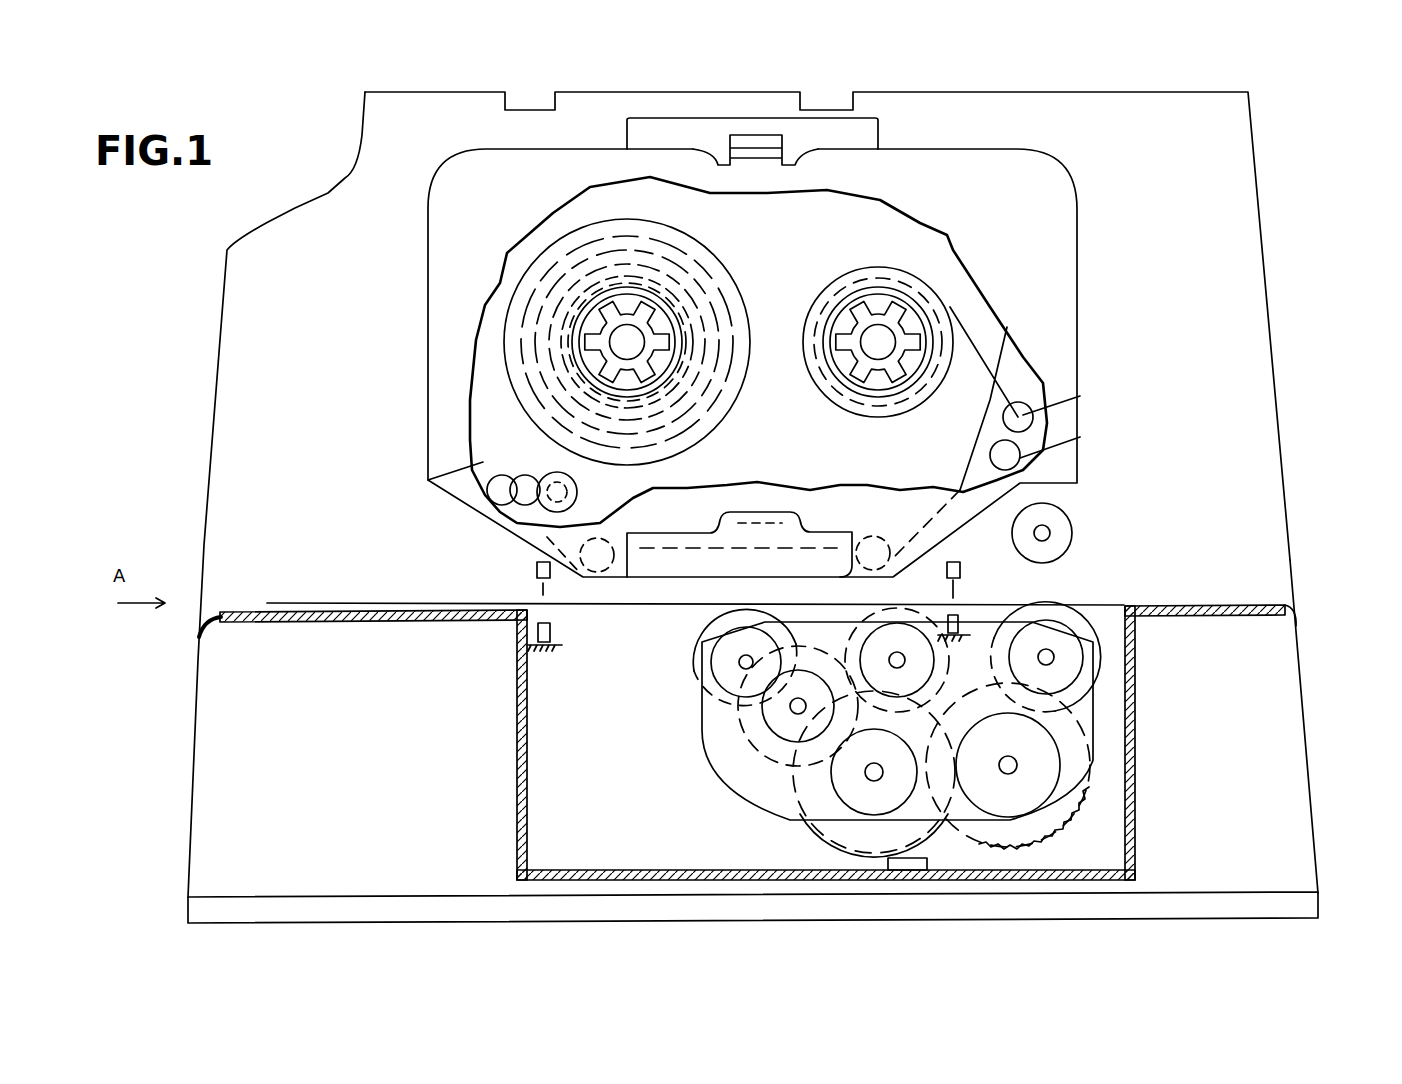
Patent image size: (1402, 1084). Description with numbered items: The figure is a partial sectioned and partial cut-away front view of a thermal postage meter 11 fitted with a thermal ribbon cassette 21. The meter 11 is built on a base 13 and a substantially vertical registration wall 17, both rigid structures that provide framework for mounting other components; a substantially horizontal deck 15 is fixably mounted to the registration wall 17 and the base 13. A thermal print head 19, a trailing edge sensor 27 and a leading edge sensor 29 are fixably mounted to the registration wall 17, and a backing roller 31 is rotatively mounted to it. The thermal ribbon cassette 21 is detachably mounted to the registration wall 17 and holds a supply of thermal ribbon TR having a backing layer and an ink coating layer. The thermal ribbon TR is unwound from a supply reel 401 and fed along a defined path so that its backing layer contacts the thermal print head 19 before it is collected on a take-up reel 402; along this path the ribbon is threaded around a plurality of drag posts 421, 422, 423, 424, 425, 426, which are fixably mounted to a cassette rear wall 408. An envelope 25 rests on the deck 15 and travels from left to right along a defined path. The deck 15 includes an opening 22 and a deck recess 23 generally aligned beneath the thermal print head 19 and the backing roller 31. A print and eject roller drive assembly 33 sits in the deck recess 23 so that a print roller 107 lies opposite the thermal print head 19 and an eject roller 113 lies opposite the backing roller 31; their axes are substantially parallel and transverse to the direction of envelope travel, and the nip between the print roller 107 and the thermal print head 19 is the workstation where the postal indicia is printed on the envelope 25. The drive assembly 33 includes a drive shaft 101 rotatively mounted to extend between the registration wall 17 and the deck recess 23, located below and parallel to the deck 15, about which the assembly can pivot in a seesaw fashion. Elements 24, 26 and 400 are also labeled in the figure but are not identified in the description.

The thermal postage meter 11 is at (1323, 159).
The base 13 is at (1312, 903).
The deck 15 is at (1235, 605).
The registration wall 17 is at (1275, 472).
The thermal print head 19 is at (687, 530).
The thermal ribbon cassette 21 is at (1127, 240).
The opening 22 is at (533, 603).
The deck recess 23 is at (1111, 612).
The support pin 24 is at (956, 598).
The envelope 25 is at (397, 610).
The cartridge bottom plate 26 is at (262, 603).
The trailing edge sensor 27 is at (532, 567).
The leading edge sensor 29 is at (955, 562).
The backing roller 31 is at (1062, 524).
The print and eject roller drive assembly 33 is at (667, 777).
The drive shaft 101 is at (940, 676).
The print roller 107 is at (692, 633).
The eject roller 113 is at (1098, 647).
The ribbon cartridge 400 is at (1080, 348).
The supply reel 401 is at (660, 295).
The take-up reel 402 is at (830, 400).
The cassette rear wall 408 is at (845, 212).
The drag post 421 is at (428, 478).
The drag post 422 is at (601, 531).
The drag post 423 is at (878, 522).
The drag post 424 is at (1017, 453).
The drag post 425 is at (1030, 414).
The drag post 426 is at (556, 472).
The thermal ribbon TR is at (1007, 327).